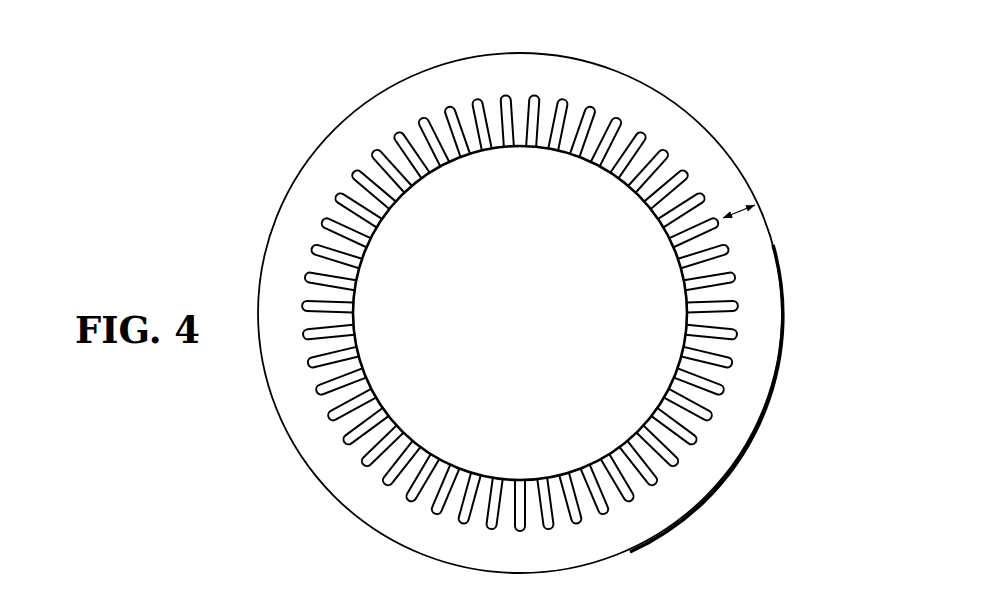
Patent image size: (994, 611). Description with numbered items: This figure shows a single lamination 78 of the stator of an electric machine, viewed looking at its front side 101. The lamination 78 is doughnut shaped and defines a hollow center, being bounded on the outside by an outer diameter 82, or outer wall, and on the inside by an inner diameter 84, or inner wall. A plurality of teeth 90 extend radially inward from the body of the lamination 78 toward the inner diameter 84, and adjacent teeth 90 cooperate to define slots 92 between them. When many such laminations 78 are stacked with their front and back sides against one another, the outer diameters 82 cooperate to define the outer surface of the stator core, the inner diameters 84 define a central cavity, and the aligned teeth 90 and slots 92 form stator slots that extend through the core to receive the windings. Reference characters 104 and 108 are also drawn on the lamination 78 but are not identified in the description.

The lamination 78 is at (522, 295).
The outer diameter 82 is at (287, 196).
The inner diameter 84 is at (398, 193).
The teeth 90 is at (453, 149).
The slots 92 is at (483, 124).
The front side 101 is at (363, 119).
The yoke thickness 104 is at (735, 211).
The slot end / tooth root 108 is at (726, 219).